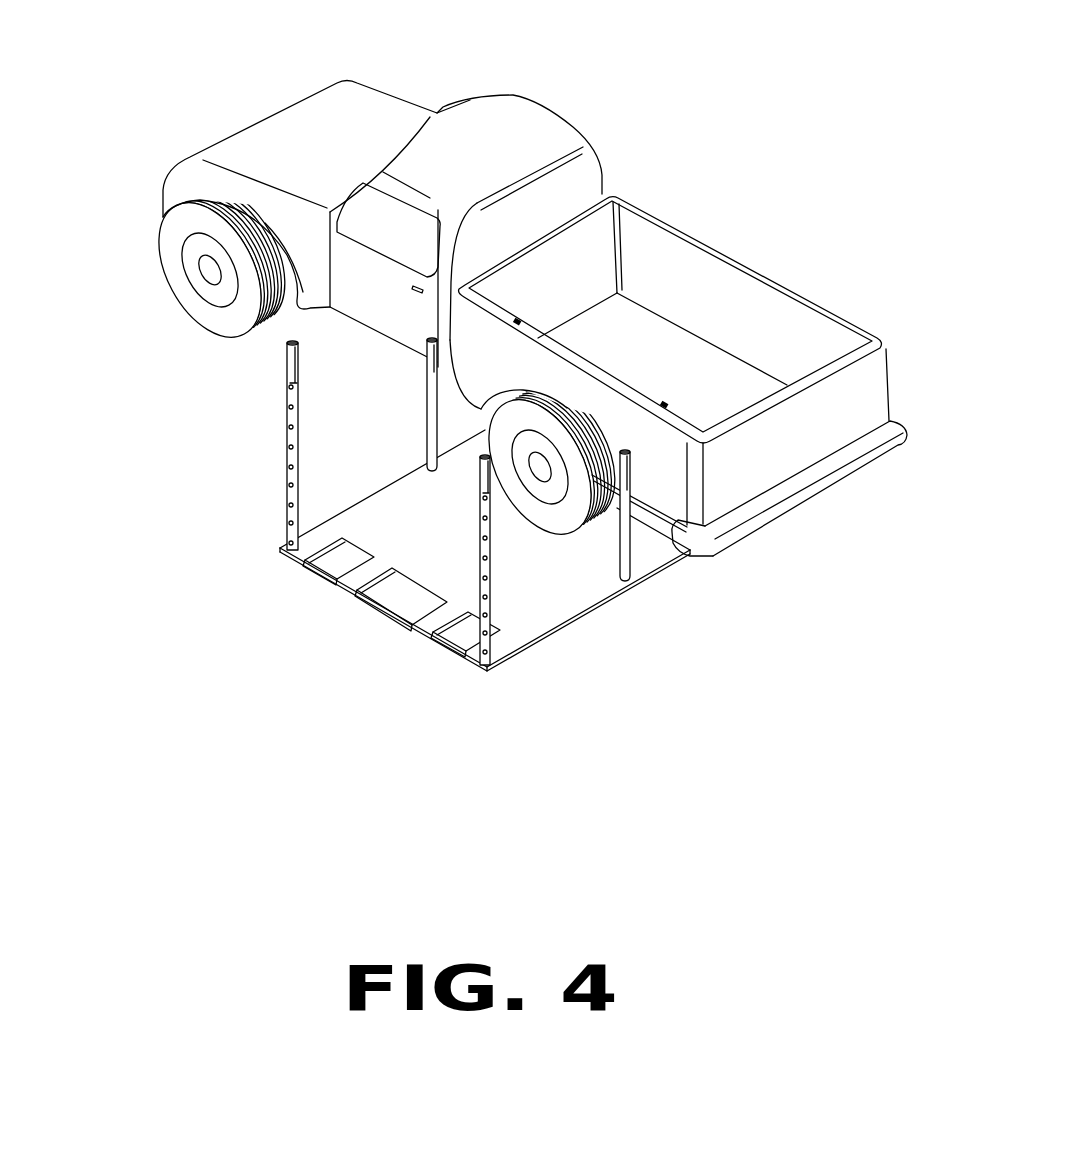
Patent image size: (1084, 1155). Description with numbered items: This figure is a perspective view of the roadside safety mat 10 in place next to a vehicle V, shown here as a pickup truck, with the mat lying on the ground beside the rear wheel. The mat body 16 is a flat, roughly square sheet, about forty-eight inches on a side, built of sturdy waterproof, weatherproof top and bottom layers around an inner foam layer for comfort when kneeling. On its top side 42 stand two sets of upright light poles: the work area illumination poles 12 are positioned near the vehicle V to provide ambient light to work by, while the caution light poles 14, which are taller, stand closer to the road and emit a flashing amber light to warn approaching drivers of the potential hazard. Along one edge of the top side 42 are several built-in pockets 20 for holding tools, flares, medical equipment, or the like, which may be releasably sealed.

The vehicle V is at (512, 120).
The roadside safety mat 10 is at (400, 542).
The work area illumination poles 12 is at (430, 392).
The caution light poles 14 is at (289, 475).
The mat body 16 is at (275, 557).
The built-in pockets 20 is at (305, 562).
The top side 42 is at (443, 593).